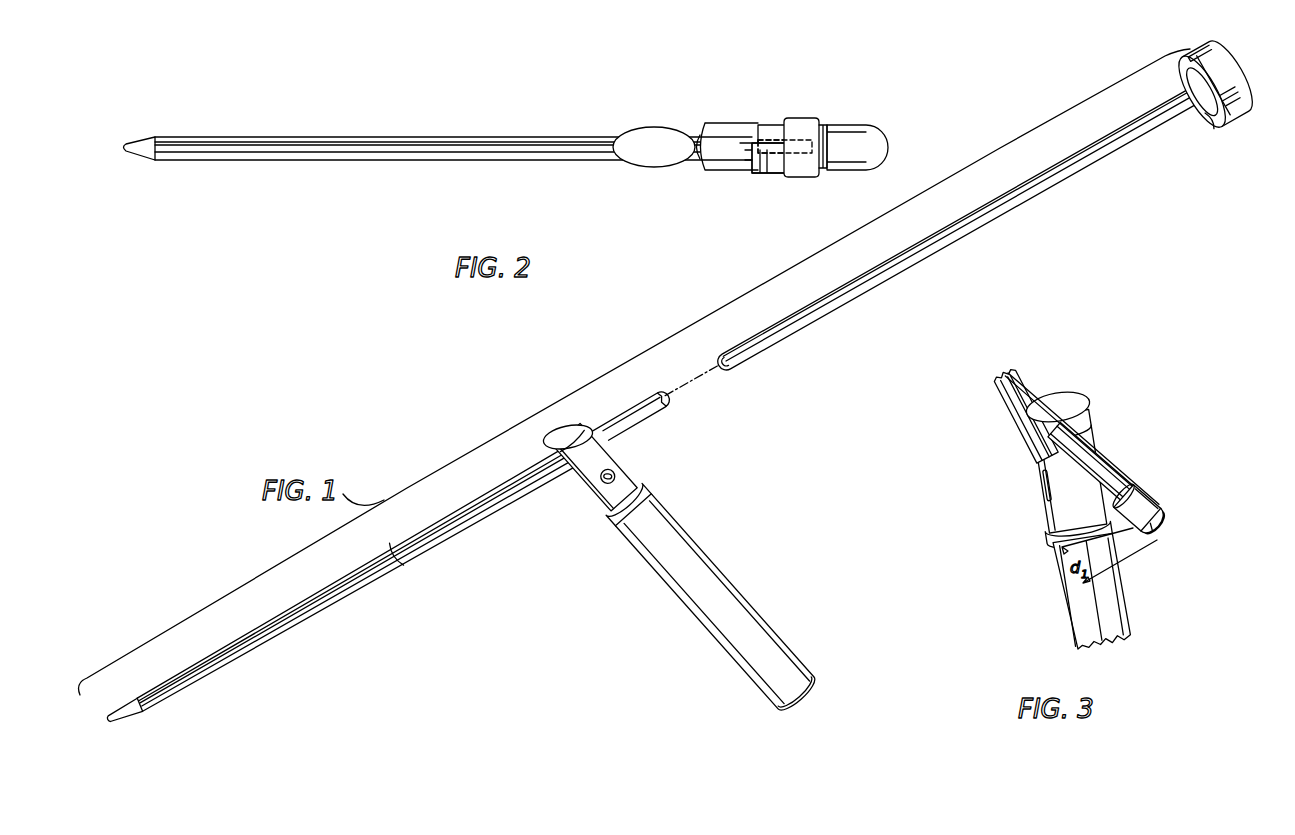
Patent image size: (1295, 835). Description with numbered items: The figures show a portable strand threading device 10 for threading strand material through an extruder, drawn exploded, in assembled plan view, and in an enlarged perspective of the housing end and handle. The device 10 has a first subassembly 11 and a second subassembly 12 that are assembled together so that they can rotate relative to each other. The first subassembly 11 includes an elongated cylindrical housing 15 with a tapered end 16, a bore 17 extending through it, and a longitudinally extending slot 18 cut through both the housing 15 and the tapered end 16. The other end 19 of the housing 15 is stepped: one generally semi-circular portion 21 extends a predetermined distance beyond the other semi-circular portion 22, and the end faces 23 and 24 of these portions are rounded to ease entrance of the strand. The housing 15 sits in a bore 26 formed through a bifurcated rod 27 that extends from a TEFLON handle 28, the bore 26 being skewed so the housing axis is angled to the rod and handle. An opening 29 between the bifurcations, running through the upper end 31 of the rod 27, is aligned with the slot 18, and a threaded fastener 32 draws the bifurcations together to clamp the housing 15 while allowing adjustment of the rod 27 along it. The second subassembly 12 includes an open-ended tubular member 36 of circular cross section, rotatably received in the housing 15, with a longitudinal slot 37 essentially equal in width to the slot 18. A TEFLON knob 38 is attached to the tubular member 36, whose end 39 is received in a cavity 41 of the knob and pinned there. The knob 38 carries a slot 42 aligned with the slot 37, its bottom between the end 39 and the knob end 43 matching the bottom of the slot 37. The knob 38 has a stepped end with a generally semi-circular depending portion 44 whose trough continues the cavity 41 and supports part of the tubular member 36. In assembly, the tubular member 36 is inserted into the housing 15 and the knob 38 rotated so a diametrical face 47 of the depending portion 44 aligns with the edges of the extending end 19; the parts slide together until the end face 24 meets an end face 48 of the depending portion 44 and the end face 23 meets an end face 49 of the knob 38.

In FIG. 1, the strand threading device 10 is at (771, 525).
In FIG. 1, the first subassembly 11 is at (496, 516).
In FIG. 1, the second subassembly 12 is at (937, 256).
In FIG. 2, the housing 15 is at (468, 136).
In FIG. 1, the housing 15 is at (298, 636).
In FIG. 3, the housing 15 is at (1000, 410).
In FIG. 2, the tapered end 16 is at (140, 142).
In FIG. 1, the tapered end 16 is at (110, 727).
In FIG. 3, the bore 17 is at (1132, 503).
In FIG. 1, the slot 18 is at (398, 566).
In FIG. 3, the slot 18 is at (1010, 374).
In FIG. 3, the other end 19 is at (1160, 505).
In FIG. 3, the semi-circular portion 21 is at (1162, 537).
In FIG. 3, the other semi-circular portion 22 is at (1050, 522).
In FIG. 3, the end face 23 is at (1165, 522).
In FIG. 3, the end face 24 is at (1117, 498).
In FIG. 1, the bore 26 is at (548, 450).
In FIG. 3, the bore 26 is at (1050, 460).
In FIG. 1, the bifurcated rod 27 is at (636, 492).
In FIG. 3, the bifurcated rod 27 is at (1047, 437).
In FIG. 2, the handle 28 is at (866, 135).
In FIG. 1, the handle 28 is at (757, 614).
In FIG. 3, the handle 28 is at (1068, 632).
In FIG. 1, the opening 29 is at (572, 428).
In FIG. 3, the opening 29 is at (1075, 430).
In FIG. 2, the upper end 31 is at (649, 165).
In FIG. 1, the upper end 31 is at (574, 448).
In FIG. 3, the upper end 31 is at (1075, 405).
In FIG. 1, the fastener 32 is at (618, 474).
In FIG. 3, the fastener 32 is at (1042, 483).
In FIG. 1, the tubular member 36 is at (816, 312).
In FIG. 1, the slot 37 is at (1047, 183).
In FIG. 2, the knob 38 is at (800, 118).
In FIG. 1, the knob 38 is at (1250, 100).
In FIG. 2, the end 39 is at (801, 177).
In FIG. 2, the cavity 41 is at (777, 177).
In FIG. 1, the slot 42 is at (1226, 112).
In FIG. 2, the end 43 is at (828, 125).
In FIG. 2, the depending portion 44 is at (760, 173).
In FIG. 1, the depending portion 44 is at (1210, 62).
In FIG. 2, the diametrical face 47 is at (766, 134).
In FIG. 1, the diametrical face 47 is at (1241, 77).
In FIG. 1, the end face 48 is at (1195, 116).
In FIG. 1, the end face 49 is at (1190, 86).